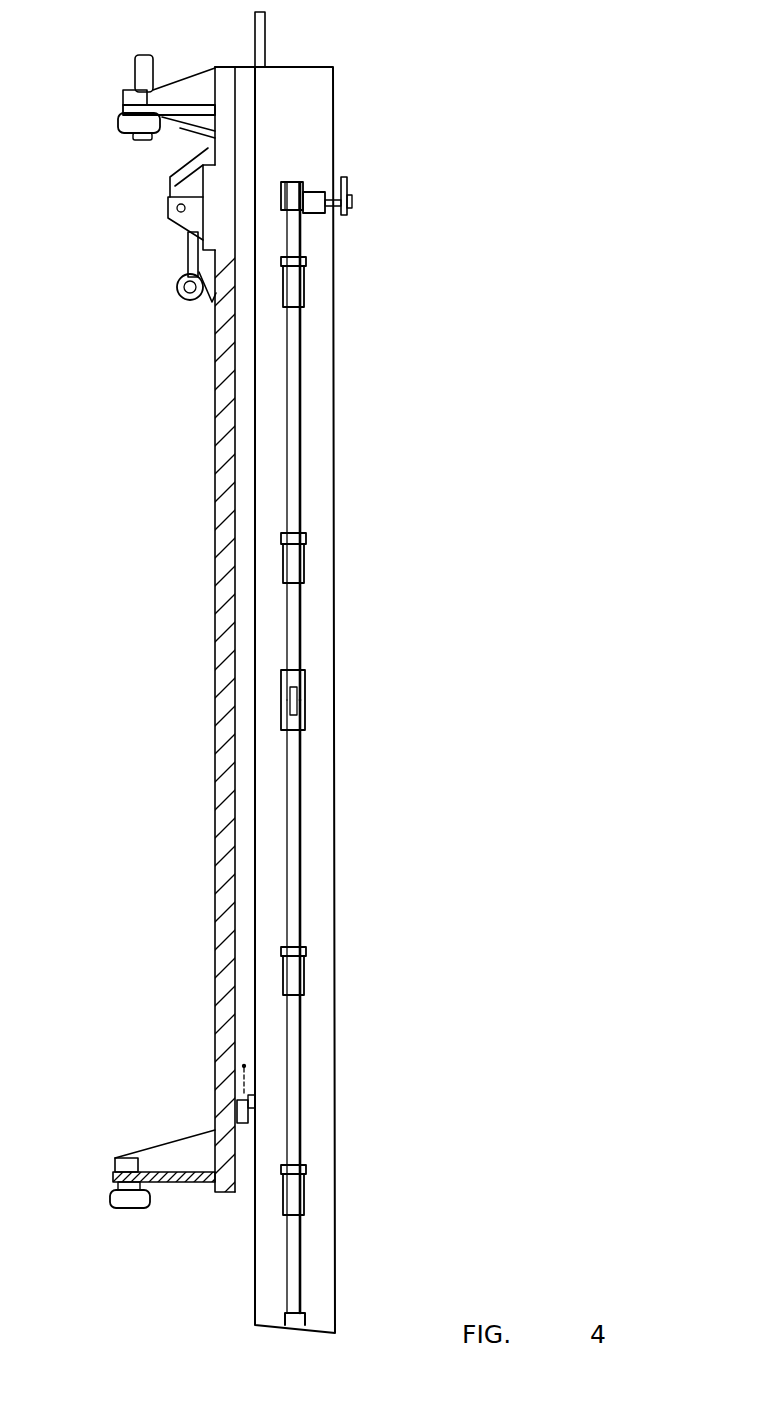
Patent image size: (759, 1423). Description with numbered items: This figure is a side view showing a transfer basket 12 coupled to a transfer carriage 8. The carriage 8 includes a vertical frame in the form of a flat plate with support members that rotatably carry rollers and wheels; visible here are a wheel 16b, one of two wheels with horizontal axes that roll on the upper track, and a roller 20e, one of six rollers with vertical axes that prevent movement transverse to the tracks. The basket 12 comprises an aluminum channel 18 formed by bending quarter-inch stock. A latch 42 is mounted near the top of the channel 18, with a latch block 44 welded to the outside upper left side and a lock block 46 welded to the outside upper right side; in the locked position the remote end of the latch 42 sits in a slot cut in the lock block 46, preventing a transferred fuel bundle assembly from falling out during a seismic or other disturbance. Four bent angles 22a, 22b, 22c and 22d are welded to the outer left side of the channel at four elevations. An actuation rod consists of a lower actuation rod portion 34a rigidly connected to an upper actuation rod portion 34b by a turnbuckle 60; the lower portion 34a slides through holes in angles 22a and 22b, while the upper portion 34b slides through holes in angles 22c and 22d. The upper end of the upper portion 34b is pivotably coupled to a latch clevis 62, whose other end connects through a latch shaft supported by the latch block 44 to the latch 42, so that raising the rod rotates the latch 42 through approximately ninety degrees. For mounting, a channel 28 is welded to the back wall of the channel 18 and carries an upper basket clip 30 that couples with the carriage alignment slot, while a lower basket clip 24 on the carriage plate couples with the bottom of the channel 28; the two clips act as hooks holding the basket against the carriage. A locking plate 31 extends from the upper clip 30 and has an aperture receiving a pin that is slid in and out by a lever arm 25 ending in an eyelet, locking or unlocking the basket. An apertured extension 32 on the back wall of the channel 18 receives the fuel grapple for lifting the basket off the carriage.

The transfer carriage 8 is at (193, 716).
The transfer basket 12 is at (338, 620).
The wheel 16b is at (135, 60).
The aluminum channel 18 is at (335, 125).
The roller 20e is at (120, 1208).
The bent angle 22a is at (307, 1200).
The bent angle 22b is at (307, 982).
The bent angle 22c is at (305, 557).
The bent angle 22d is at (307, 282).
The lower basket clip 24 is at (243, 1116).
The lever arm and pin locking mechanism 25 is at (178, 290).
The channel 28 is at (250, 362).
The upper basket clip 30 is at (217, 210).
The locking plate 31 is at (170, 204).
The apertured extension 32 is at (263, 50).
The lower actuation rod portion 34a is at (300, 812).
The upper actuation rod portion 34b is at (303, 430).
The latch 42 is at (356, 173).
The latch block 44 is at (313, 217).
The lock block 46 is at (352, 205).
The turnbuckle 60 is at (303, 705).
The latch clevis 62 is at (281, 193).